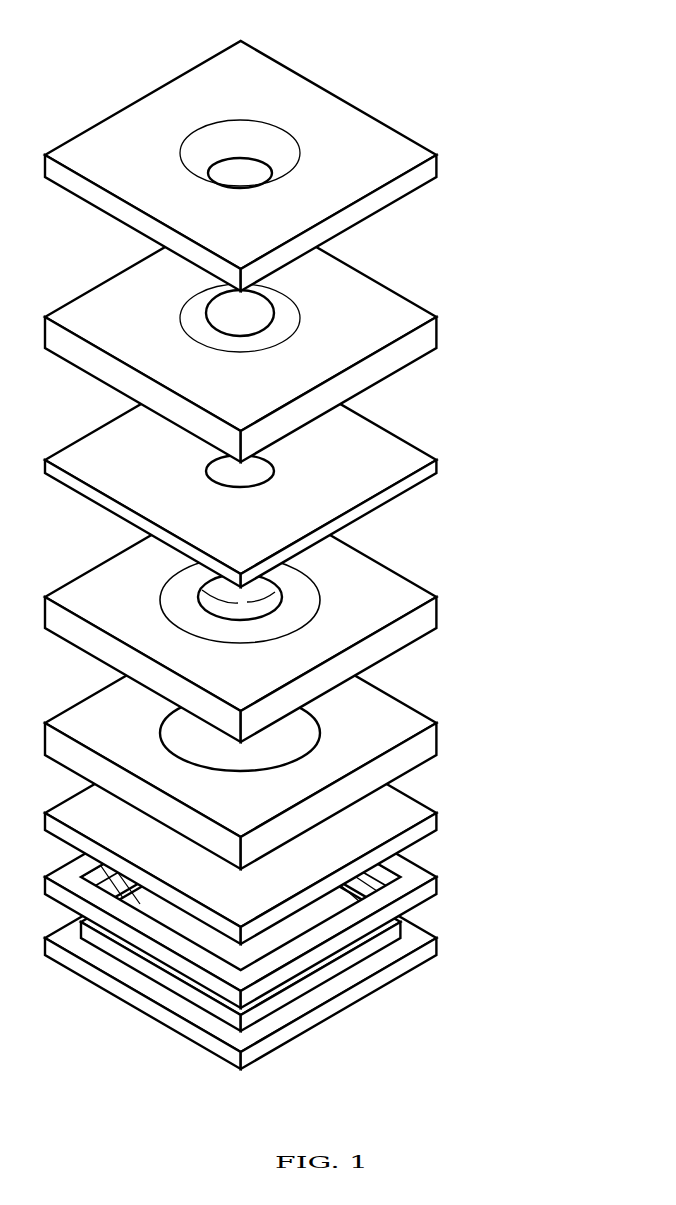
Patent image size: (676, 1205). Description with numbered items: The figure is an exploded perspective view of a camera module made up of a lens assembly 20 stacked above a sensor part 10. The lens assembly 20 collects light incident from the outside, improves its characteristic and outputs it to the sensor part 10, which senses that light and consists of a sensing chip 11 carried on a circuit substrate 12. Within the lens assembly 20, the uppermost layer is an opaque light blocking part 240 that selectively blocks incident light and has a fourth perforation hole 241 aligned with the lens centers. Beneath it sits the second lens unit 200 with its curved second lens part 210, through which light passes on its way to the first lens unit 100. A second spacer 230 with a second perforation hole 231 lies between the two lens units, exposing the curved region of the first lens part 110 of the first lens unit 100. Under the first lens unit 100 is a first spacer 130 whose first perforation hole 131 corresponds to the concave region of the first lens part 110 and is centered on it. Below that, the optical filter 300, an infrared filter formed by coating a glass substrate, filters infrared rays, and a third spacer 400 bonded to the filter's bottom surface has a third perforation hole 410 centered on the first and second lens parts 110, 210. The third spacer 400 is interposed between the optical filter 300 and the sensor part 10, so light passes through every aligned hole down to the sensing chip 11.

The sensor part 10 is at (240, 949).
The sensing chip 11 is at (343, 960).
The circuit substrate 12 is at (320, 997).
The lens assembly 20 is at (309, 519).
The first lens unit 100 is at (260, 612).
The first lens part 110 is at (272, 588).
The first spacer 130 is at (269, 739).
The first perforation hole 131 is at (278, 754).
The second lens unit 200 is at (264, 332).
The second lens part 210 is at (257, 308).
The second spacer 230 is at (264, 466).
The second perforation hole 231 is at (259, 476).
The light blocking part 240 is at (275, 161).
The fourth perforation hole 241 is at (247, 172).
The optical filter 300 is at (410, 813).
The third spacer 400 is at (265, 885).
The third perforation hole 410 is at (374, 887).